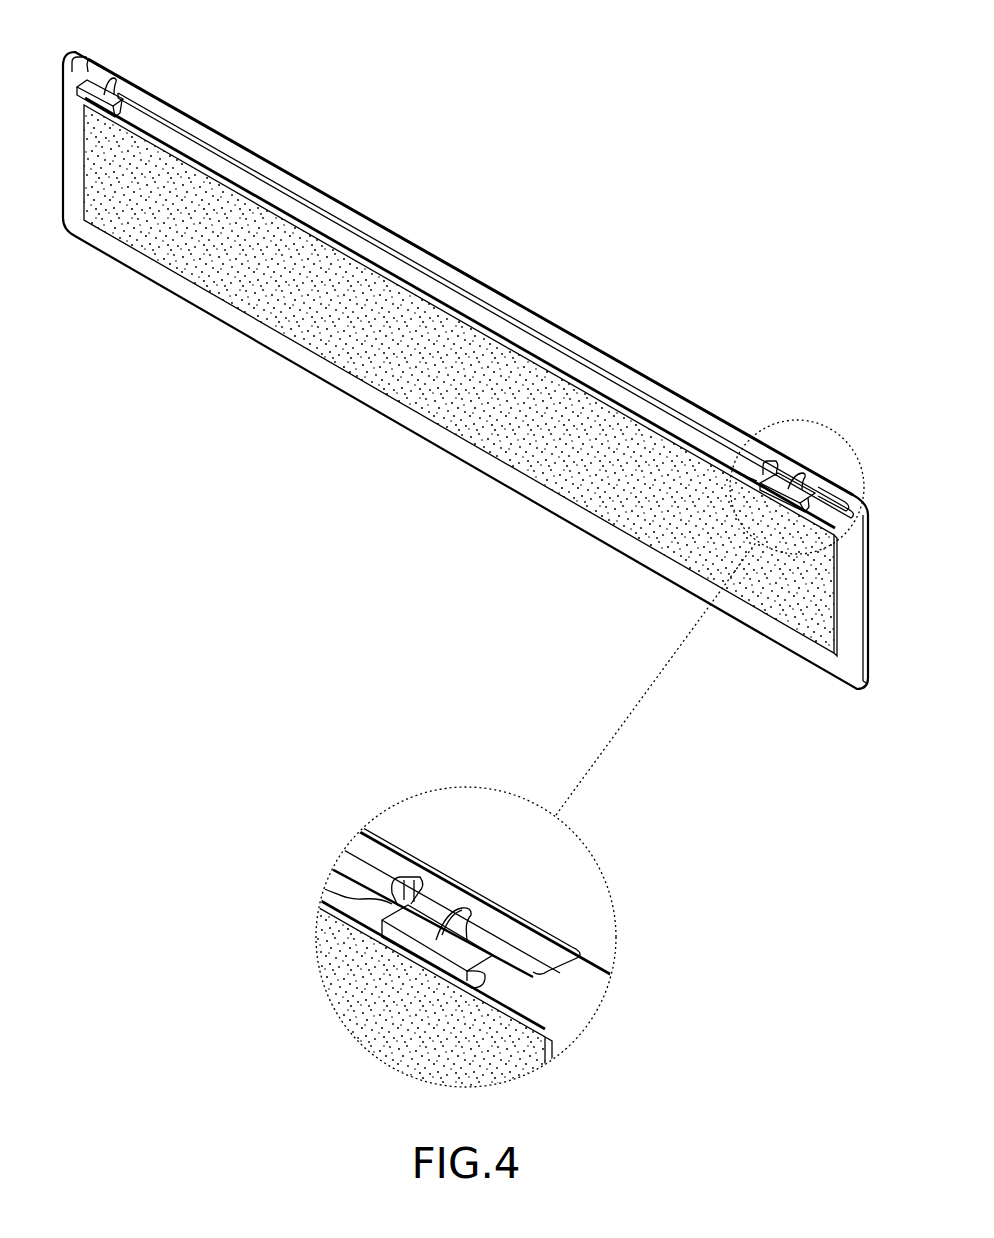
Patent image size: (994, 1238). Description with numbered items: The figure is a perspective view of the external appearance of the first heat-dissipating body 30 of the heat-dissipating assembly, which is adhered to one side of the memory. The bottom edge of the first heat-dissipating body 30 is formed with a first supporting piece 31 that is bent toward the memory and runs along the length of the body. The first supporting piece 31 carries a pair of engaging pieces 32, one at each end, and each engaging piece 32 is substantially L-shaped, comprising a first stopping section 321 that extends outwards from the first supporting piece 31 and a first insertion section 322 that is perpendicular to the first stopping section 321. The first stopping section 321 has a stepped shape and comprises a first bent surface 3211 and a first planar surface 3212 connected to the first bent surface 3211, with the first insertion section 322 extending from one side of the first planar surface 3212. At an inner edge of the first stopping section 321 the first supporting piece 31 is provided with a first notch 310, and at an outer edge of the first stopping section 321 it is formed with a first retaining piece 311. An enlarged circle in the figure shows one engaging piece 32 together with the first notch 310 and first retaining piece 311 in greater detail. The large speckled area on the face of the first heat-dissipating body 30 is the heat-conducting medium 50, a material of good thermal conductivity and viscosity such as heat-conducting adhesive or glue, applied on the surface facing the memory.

The first heat-dissipating body 30 is at (458, 236).
The first supporting piece 31 is at (503, 307).
The engaging piece 32 is at (130, 111).
The heat-conducting medium 50 is at (437, 412).
The first notch 310 is at (736, 470).
The first retaining piece 311 is at (840, 487).
The first stopping section 321 is at (790, 478).
The first insertion section 322 is at (808, 498).
The first bent surface 3211 is at (438, 906).
The first planar surface 3212 is at (462, 912).